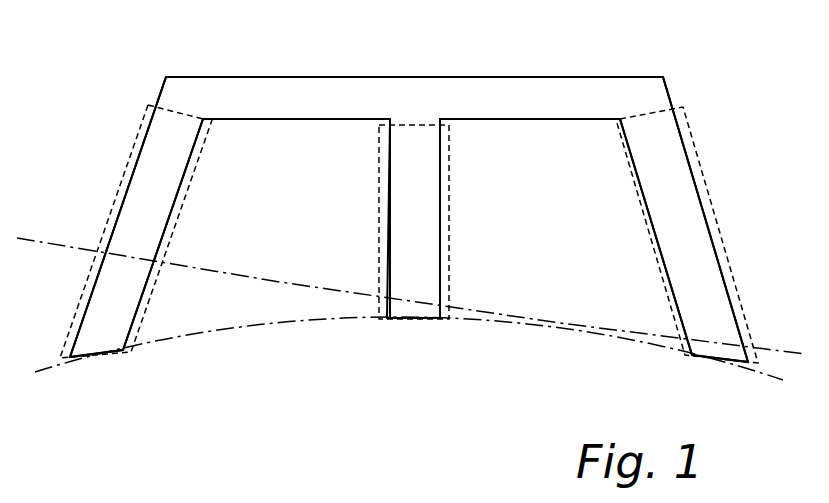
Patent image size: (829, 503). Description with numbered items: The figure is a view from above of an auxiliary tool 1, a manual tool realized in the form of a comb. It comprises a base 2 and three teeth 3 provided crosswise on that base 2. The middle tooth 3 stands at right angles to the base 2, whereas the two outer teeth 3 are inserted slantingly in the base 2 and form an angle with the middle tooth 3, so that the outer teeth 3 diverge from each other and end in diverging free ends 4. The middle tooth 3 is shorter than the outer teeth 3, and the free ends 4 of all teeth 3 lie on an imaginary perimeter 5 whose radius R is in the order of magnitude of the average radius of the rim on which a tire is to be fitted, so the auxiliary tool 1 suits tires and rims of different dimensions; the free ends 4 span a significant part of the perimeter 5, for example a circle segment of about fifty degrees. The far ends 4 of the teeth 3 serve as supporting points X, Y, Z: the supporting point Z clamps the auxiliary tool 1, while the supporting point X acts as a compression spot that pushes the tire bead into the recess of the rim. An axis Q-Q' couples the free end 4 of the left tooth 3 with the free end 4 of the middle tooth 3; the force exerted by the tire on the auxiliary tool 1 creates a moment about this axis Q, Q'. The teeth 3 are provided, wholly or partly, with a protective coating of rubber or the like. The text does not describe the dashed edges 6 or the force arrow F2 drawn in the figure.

The auxiliary tool 1 is at (638, 55).
The base 2 is at (331, 93).
The teeth 3 is at (135, 195).
The free ends 4 is at (73, 353).
The imaginary perimeter 5 is at (545, 322).
The bevelled edges 6 is at (88, 282).
The radius R is at (177, 338).
The supporting point X is at (100, 350).
The supporting point Y is at (414, 310).
The supporting point Z is at (717, 354).
The force direction F2 is at (302, 360).
The axis end Q' is at (26, 233).
The axis end Q is at (802, 347).